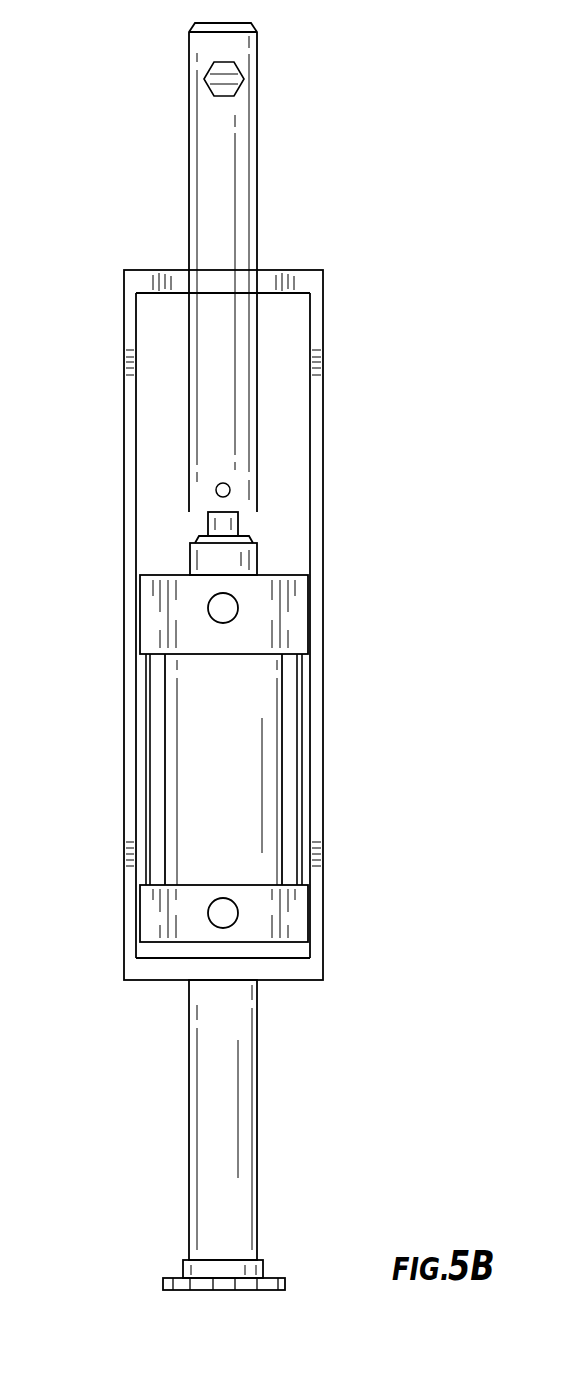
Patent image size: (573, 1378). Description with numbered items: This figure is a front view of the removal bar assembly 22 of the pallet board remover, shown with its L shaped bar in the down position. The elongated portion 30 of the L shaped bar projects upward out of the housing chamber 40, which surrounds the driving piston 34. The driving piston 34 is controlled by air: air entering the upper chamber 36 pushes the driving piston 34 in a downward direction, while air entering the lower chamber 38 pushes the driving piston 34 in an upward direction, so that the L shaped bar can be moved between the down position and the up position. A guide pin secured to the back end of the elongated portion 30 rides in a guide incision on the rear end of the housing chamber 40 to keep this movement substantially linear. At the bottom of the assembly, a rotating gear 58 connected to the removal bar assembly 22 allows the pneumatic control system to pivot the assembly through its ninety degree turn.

The removal bar assembly 22 is at (401, 115).
The elongated portion 30 is at (187, 172).
The housing chamber 40 is at (122, 508).
The driving piston 34 is at (203, 740).
The upper chamber 36 is at (257, 688).
The lower chamber 38 is at (257, 843).
The rotating gear 58 is at (289, 1282).